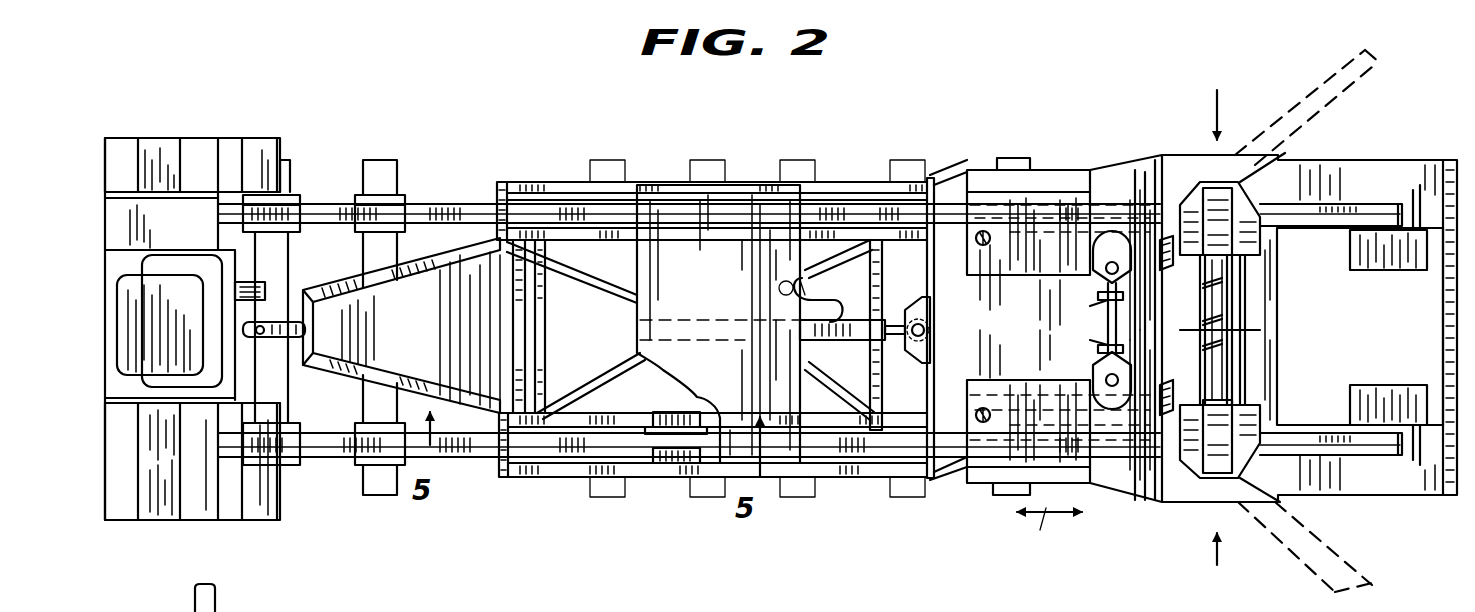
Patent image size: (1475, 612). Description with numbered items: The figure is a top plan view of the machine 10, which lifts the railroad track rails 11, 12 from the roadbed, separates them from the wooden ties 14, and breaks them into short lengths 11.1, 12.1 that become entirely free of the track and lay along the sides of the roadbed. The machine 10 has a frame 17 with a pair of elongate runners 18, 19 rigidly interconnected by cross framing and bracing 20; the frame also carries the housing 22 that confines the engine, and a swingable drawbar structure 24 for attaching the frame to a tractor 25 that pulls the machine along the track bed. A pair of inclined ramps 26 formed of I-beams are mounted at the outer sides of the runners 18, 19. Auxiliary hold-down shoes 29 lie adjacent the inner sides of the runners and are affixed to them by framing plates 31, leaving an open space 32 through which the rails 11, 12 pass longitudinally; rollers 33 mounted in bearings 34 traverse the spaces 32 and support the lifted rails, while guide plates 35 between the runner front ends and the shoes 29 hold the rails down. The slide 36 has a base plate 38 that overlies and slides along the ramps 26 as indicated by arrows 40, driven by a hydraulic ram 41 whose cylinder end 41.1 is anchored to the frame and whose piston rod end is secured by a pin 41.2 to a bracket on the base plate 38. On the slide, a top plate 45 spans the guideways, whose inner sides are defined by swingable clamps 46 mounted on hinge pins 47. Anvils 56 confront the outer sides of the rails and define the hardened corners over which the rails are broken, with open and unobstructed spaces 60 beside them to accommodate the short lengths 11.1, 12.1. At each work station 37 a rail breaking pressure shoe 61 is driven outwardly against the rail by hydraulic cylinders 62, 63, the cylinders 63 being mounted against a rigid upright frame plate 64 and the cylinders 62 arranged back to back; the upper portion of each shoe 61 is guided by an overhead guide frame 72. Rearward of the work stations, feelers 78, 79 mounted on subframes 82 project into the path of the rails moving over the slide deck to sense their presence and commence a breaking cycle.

The machine 10 is at (1070, 166).
The railroad track rail 11 is at (418, 218).
The short length of rail 11.1 is at (1322, 50).
The railroad track rail 12 is at (325, 447).
The short length of rail 12.1 is at (1372, 540).
The wooden ties 14 is at (380, 160).
The frame 17 is at (625, 182).
The runner 18 is at (530, 192).
The runner 19 is at (548, 475).
The cross framing and bracing 20 is at (545, 343).
The housing 22 is at (700, 185).
The swingable drawbar structure 24 is at (332, 368).
The tractor 25 is at (245, 138).
The inclined ramps 26 is at (826, 182).
The auxiliary hold-down shoes 29 is at (575, 235).
The framing plates 31 is at (612, 465).
The space 32 is at (560, 200).
The rollers 33 is at (668, 425).
The bearings 34 is at (667, 415).
The guide plates 35 is at (500, 183).
The slide 36 is at (1043, 166).
The work station 37 is at (1209, 328).
The base plate 38 is at (940, 395).
The arrows 40 is at (1049, 533).
The hydraulic cylinder or ram 41 is at (865, 325).
The cylinder end 41.1 is at (672, 335).
The pin 41.2 is at (925, 362).
The top plate 45 is at (990, 455).
The clamps 46 is at (1088, 262).
The hinge pins 47 is at (990, 415).
The anvils 56 is at (1182, 150).
The open and unobstructed spaces 60 is at (1240, 178).
The rail breaking pressure shoe 61 is at (1245, 250).
The hydraulic cylinders 62 is at (1215, 295).
The hydraulic cylinders 63 is at (1215, 362).
The frame plate 64 is at (1245, 328).
The overhead guide frame 72 is at (1262, 178).
The feeler 78 is at (1420, 195).
The feeler 79 is at (1420, 465).
The subframes 82 is at (1410, 270).